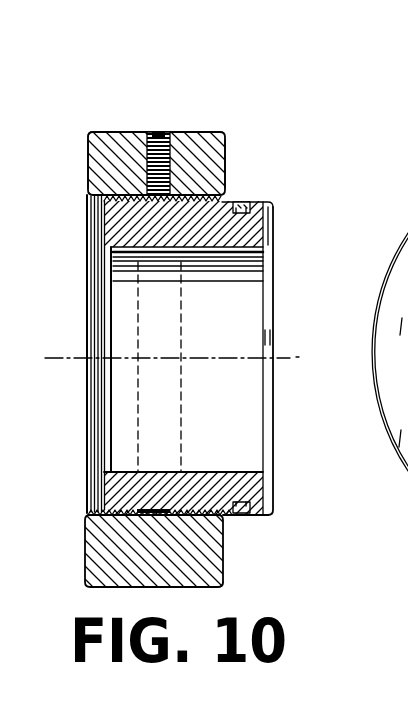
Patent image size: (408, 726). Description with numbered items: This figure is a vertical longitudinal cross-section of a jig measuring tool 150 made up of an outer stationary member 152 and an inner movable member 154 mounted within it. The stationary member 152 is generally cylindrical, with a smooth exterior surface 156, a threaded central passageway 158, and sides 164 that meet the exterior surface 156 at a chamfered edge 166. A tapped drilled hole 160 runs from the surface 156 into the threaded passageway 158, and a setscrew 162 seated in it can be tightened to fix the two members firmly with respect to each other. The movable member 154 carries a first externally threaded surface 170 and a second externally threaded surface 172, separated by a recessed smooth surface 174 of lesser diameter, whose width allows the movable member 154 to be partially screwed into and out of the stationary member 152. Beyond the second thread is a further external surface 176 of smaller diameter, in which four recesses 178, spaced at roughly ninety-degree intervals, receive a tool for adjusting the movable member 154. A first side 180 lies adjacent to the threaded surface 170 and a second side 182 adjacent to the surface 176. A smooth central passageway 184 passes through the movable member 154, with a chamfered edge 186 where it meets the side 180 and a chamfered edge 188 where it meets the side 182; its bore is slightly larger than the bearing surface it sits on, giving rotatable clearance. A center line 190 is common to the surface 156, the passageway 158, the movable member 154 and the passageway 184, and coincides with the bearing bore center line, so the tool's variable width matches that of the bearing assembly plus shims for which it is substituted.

The jig measuring tool 150 is at (208, 132).
The stationary member 152 is at (110, 132).
The movable member 154 is at (274, 264).
The smooth exterior surface 156 is at (128, 133).
The threaded central passageway 158 is at (86, 458).
The tapped drilled hole 160 is at (160, 132).
The setscrew 162 is at (226, 141).
The sides 164 is at (88, 166).
The chamfered edge 166 is at (88, 134).
The first externally threaded surface 170 is at (97, 516).
The second externally threaded surface 172 is at (222, 454).
The recessed smooth surface 174 is at (157, 509).
The external surface 176 is at (265, 518).
The recesses 178 is at (250, 201).
The first side 180 is at (90, 217).
The second side 182 is at (271, 494).
The smooth central passageway 184 is at (268, 458).
The chamfered edge 186 is at (90, 258).
The chamfered edge 188 is at (270, 247).
The center line 190 is at (288, 358).